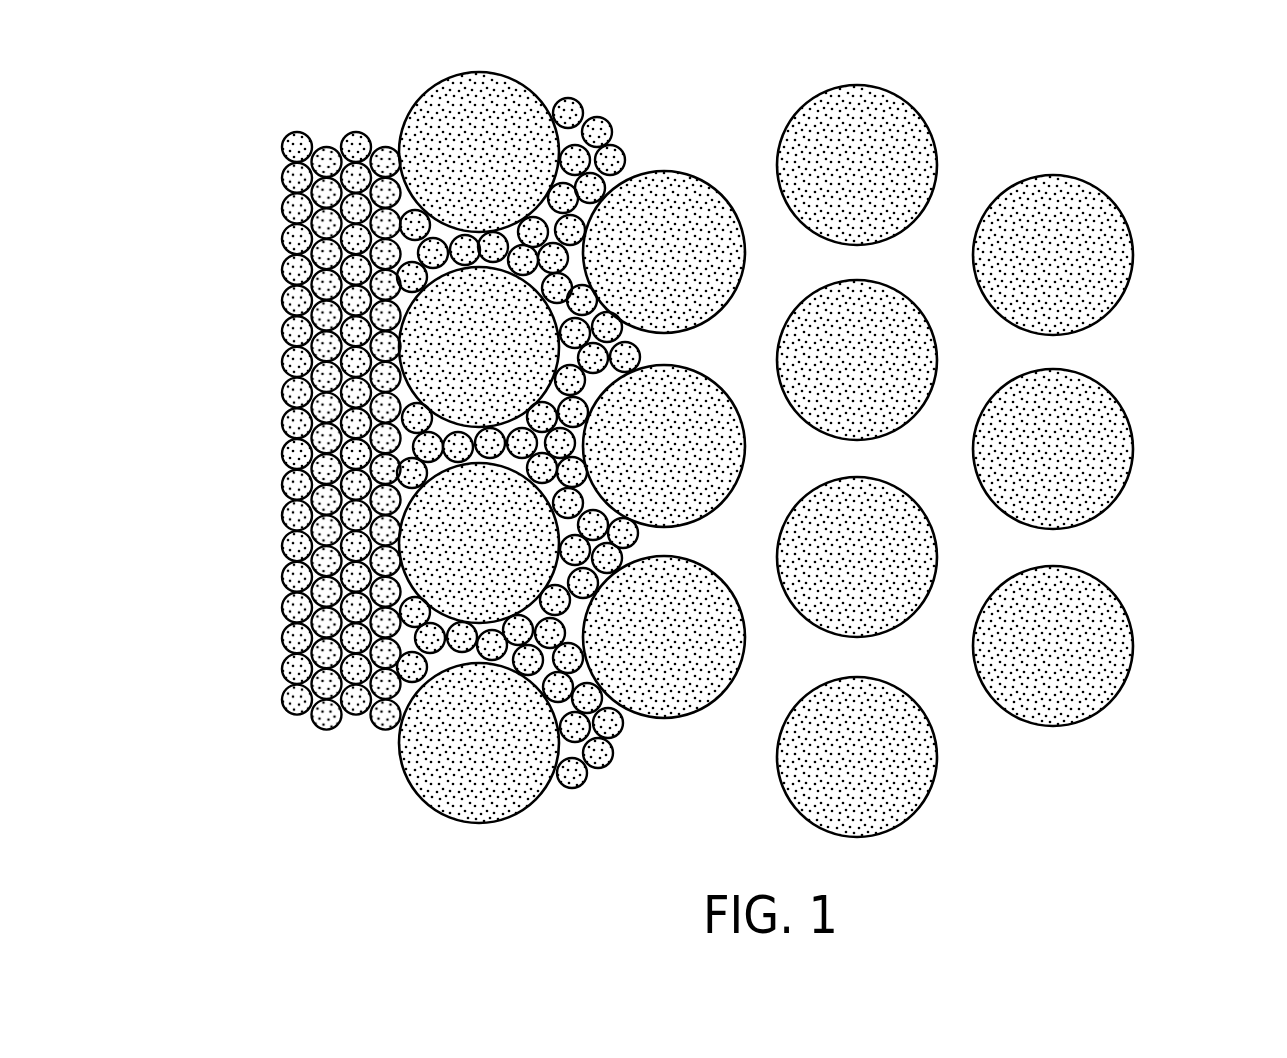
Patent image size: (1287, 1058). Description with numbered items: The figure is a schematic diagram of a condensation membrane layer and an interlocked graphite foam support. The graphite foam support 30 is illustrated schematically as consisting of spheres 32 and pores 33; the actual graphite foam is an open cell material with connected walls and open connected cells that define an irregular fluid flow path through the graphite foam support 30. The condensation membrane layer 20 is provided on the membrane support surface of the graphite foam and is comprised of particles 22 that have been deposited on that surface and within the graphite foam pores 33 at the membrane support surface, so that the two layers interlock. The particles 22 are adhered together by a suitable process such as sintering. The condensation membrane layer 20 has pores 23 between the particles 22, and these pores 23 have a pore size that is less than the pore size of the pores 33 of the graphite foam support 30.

The condensation membrane layer 20 is at (322, 94).
The particles 22 is at (290, 406).
The pores 23 is at (290, 224).
The spheres 32 is at (484, 98).
The graphite foam support 30 is at (931, 445).
The pores 33 is at (1055, 353).